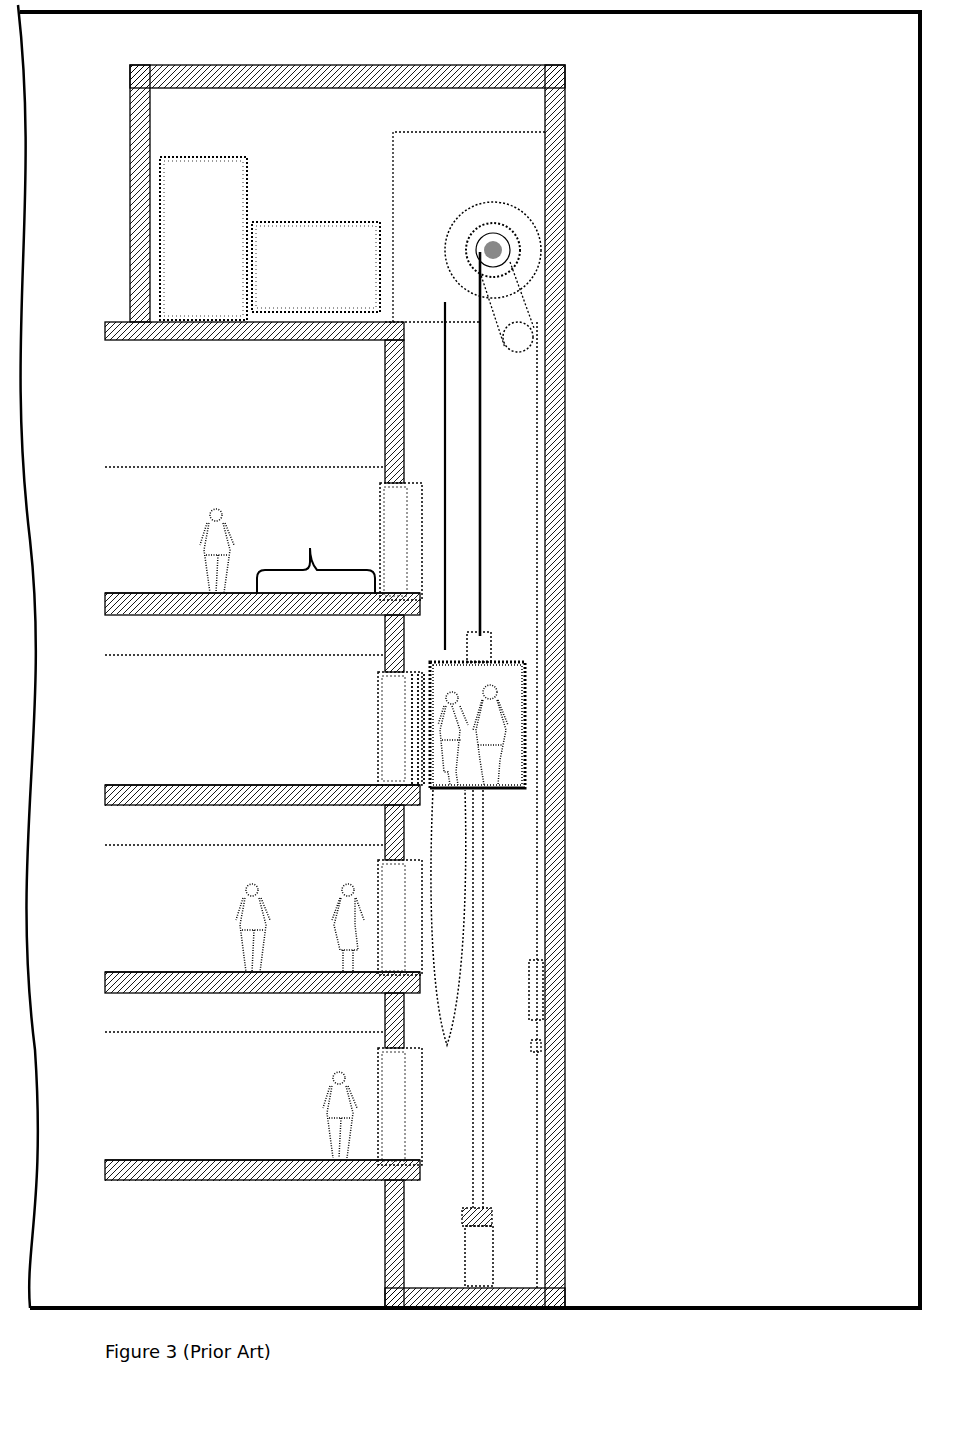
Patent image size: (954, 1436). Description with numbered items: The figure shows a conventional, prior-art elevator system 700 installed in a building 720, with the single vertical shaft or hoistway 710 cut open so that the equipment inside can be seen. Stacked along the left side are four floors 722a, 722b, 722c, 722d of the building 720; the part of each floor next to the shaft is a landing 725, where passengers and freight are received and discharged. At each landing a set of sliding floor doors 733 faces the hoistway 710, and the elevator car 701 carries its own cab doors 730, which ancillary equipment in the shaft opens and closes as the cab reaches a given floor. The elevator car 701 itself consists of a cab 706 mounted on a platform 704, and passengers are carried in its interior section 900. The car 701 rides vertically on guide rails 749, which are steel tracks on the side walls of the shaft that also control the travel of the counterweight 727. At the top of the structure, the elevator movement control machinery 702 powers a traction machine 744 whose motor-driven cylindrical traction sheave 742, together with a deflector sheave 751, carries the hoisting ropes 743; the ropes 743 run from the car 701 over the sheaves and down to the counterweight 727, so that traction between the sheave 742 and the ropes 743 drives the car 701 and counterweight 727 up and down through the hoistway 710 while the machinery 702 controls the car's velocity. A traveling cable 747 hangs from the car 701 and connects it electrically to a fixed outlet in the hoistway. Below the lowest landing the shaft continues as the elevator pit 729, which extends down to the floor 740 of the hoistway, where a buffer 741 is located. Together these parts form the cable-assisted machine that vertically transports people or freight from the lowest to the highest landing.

The building 700 is at (588, 184).
The elevator car 701 is at (530, 722).
The machine room equipment 702 is at (258, 196).
The car floor 704 is at (512, 791).
The car frame 706 is at (530, 691).
The hoistway 710 is at (500, 387).
The elevator system 720 is at (777, 20).
The landing a 722a is at (170, 1155).
The landing b 722b is at (171, 978).
The landing c 722c is at (163, 780).
The landing d 722d is at (151, 600).
The landing zone 725 is at (316, 553).
The counterweight 727 is at (537, 1030).
The tension device 729 is at (517, 1195).
The car door 730 is at (417, 746).
The landing door 733 is at (414, 495).
The pit 740 is at (534, 1289).
The tension sheave 741 is at (474, 1217).
The drive sheave 742 is at (530, 247).
The hoisting ropes 743 is at (484, 427).
The drive machine 744 is at (346, 246).
The traveling cable 747 is at (472, 987).
The compensation rope 749 is at (486, 865).
The deflector sheave 751 is at (530, 338).
The passengers 900 is at (507, 759).